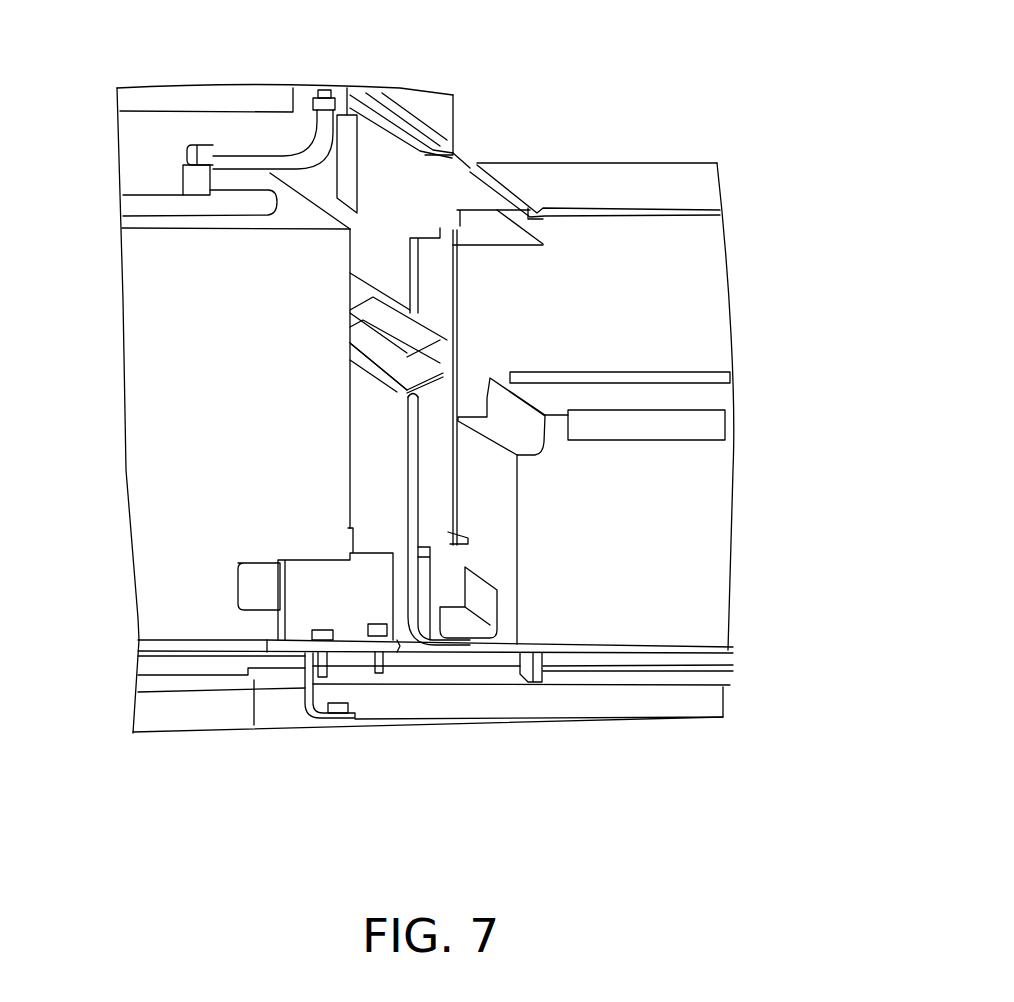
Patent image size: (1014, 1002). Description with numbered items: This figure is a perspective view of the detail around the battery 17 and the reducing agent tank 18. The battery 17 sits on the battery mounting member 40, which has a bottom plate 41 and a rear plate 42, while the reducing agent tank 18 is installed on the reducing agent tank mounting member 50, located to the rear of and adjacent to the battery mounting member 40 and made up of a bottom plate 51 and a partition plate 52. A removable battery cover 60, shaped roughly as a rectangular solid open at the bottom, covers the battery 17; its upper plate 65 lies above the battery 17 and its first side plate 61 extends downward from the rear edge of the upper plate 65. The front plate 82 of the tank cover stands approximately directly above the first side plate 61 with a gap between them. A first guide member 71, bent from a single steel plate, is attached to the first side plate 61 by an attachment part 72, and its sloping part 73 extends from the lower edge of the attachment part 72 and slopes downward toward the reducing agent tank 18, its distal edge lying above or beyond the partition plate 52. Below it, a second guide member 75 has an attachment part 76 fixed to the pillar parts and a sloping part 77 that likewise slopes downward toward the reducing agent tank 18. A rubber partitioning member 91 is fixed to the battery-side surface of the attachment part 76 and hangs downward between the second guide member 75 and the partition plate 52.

The battery 17 is at (683, 553).
The reducing agent tank 18 is at (146, 492).
The battery mounting member 40 is at (496, 662).
The bottom plate 41 is at (600, 653).
The rear plate 42 is at (453, 625).
The reducing agent tank mounting member 50 is at (203, 662).
The bottom plate 51 is at (242, 655).
The partition plate 52 is at (437, 620).
The battery cover 60 is at (667, 160).
The first side plate 61 is at (455, 277).
The upper plate 65 is at (523, 170).
The first guide member 71 is at (409, 330).
The attachment part 72 is at (440, 330).
The sloping part 73 is at (430, 345).
The second guide member 75 is at (429, 396).
The attachment part 76 is at (383, 400).
The sloping part 77 is at (380, 355).
The front plate 82 is at (470, 163).
The partitioning member 91 is at (380, 483).